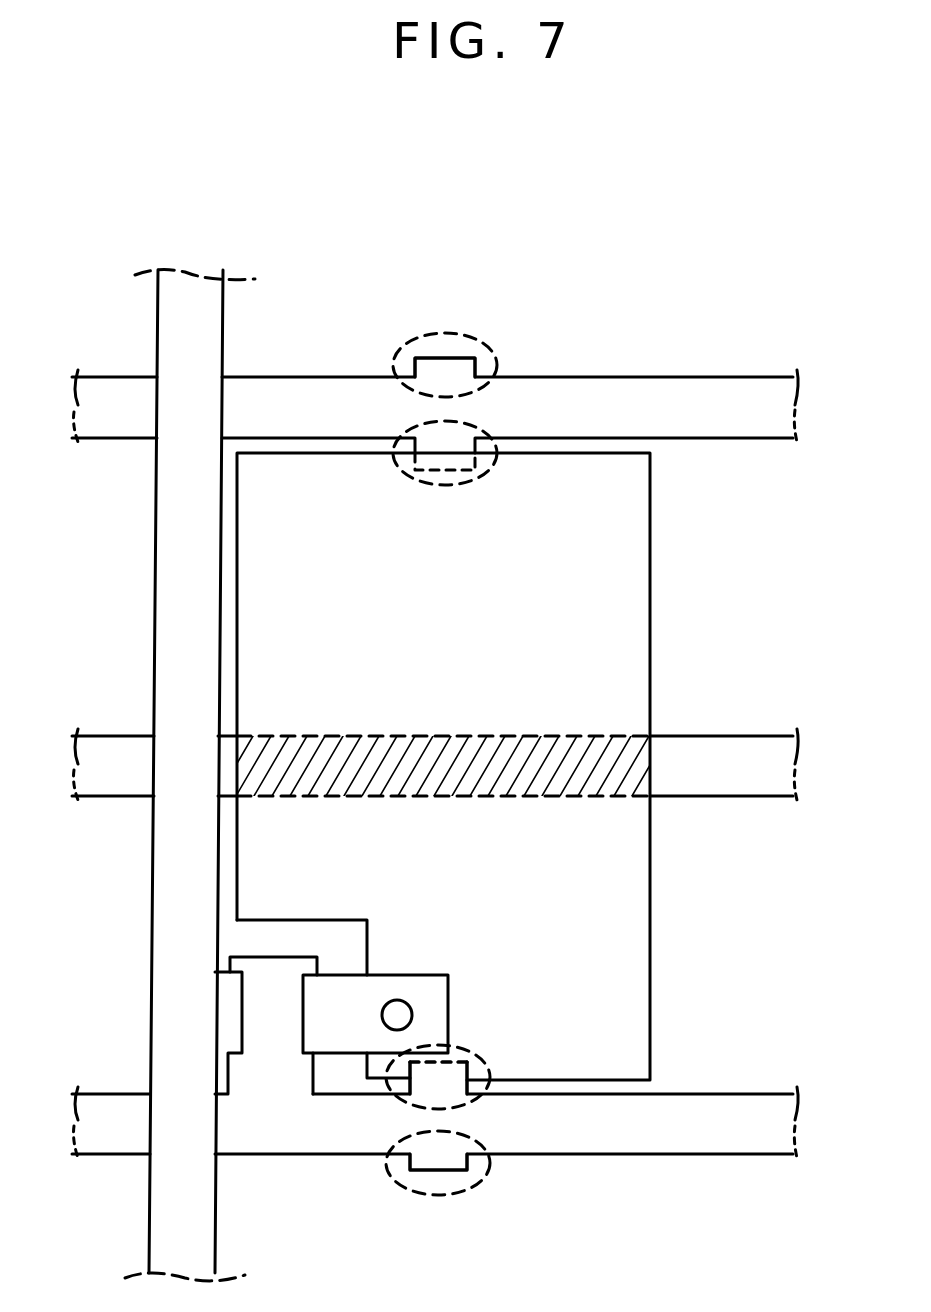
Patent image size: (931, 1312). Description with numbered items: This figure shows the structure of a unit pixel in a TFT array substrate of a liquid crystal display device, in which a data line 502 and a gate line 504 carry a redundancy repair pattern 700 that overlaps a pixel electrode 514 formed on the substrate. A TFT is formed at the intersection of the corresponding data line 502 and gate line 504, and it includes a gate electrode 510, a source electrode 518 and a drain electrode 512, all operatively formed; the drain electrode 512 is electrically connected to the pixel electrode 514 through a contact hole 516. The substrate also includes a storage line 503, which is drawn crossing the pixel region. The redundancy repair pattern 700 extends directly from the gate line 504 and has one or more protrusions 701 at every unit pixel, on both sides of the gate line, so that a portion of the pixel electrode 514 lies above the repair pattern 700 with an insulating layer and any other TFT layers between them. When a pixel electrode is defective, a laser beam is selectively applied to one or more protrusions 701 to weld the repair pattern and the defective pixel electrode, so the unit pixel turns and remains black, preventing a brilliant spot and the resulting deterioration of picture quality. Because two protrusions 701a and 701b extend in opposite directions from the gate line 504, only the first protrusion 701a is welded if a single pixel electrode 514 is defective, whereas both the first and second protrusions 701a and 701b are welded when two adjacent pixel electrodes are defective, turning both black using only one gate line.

The data line 502 is at (205, 313).
The storage line 503 is at (722, 757).
The gate line 504 is at (670, 398).
The gate electrode 510 is at (273, 967).
The drain electrode 512 is at (437, 989).
The pixel electrode 514 is at (622, 881).
The contact hole 516 is at (394, 1000).
The source electrode 518 is at (230, 1012).
The redundancy repair pattern 700 is at (492, 441).
The protrusion 701 is at (445, 363).
The first protrusion 701a is at (427, 1087).
The second protrusion 701b is at (433, 1163).